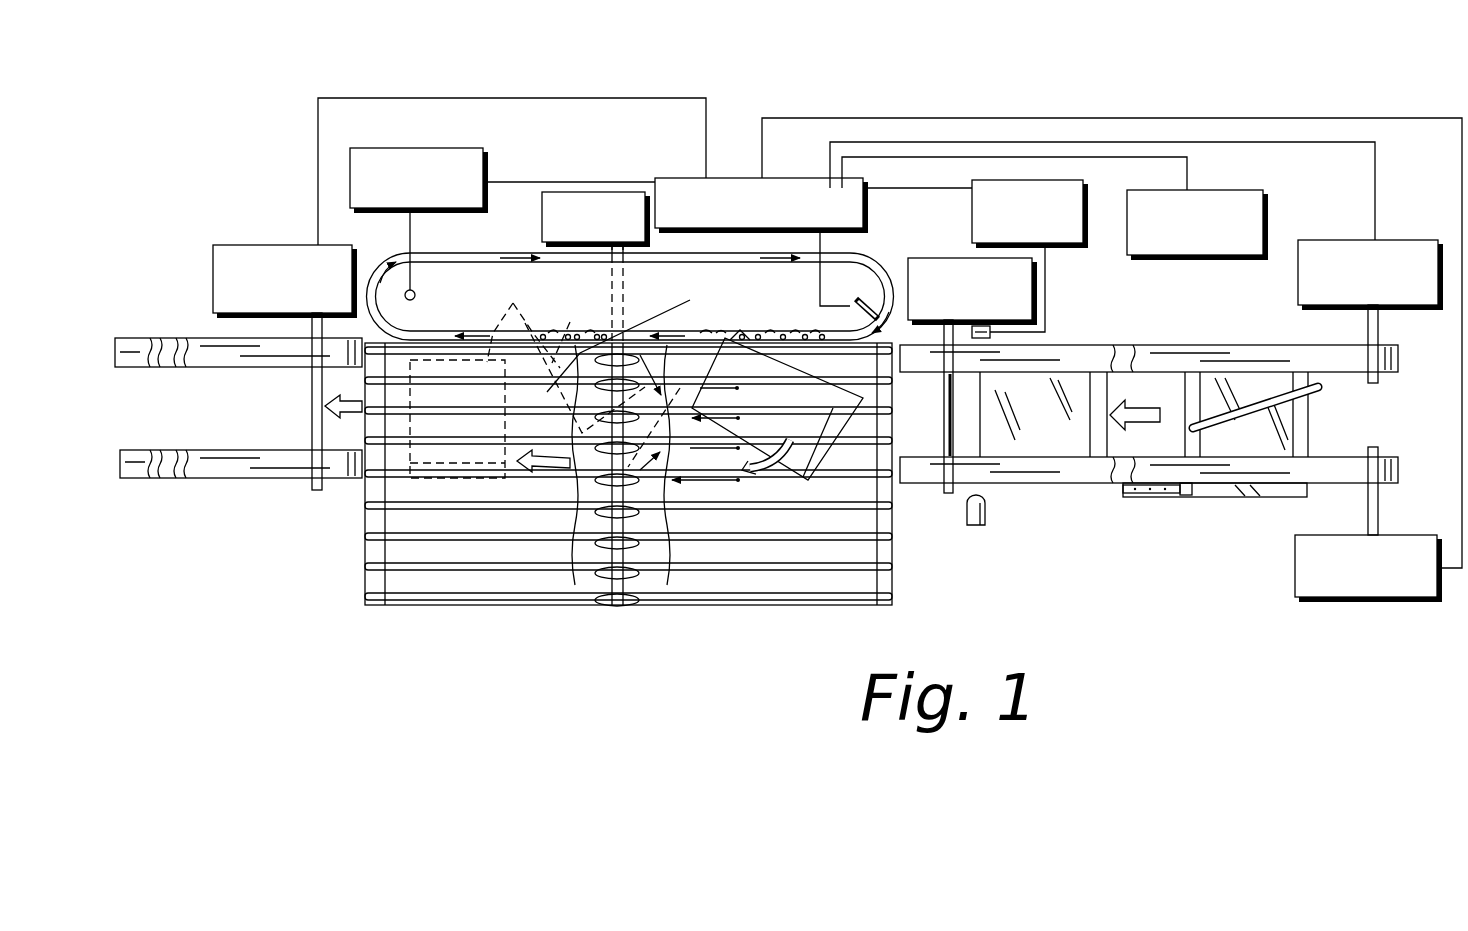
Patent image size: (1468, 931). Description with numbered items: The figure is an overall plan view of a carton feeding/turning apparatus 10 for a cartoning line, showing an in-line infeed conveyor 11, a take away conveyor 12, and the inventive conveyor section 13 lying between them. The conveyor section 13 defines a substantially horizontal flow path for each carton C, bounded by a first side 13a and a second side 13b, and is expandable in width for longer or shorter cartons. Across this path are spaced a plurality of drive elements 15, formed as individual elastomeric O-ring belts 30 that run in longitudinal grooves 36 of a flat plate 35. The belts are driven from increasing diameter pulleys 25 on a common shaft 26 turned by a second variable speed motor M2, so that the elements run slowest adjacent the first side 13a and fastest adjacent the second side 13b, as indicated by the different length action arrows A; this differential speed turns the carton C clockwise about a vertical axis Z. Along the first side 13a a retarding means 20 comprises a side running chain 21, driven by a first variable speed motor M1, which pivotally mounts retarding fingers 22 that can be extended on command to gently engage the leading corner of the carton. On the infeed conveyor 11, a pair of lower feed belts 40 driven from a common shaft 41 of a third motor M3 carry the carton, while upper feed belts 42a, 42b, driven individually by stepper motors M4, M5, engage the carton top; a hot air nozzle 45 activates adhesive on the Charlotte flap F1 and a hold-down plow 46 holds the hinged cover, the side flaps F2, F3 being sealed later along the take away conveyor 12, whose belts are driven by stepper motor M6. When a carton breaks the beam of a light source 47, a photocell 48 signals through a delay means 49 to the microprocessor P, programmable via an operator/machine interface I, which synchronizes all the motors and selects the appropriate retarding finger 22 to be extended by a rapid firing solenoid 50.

The carton feeding/turning apparatus 10 is at (724, 130).
The infeed conveyor 11 is at (1149, 422).
The take away conveyor 12 is at (290, 512).
The conveyor section 13 is at (608, 497).
The first side 13a is at (448, 351).
The second side 13b is at (488, 546).
The drive elements 15 is at (668, 426).
The retarding means 20 is at (500, 248).
The side running chain 21 is at (437, 265).
The retarding fingers 22 is at (762, 336).
The increasing diameter pulleys 25 is at (597, 416).
The common shaft 26 is at (600, 593).
The O-ring belts 30 is at (674, 350).
The flat plate 35 is at (892, 520).
The longitudinal grooves 36 is at (710, 540).
The lower feed belts 40 is at (1054, 467).
The common shaft 41 is at (943, 419).
The upper feed belt 42a is at (1250, 366).
The upper feed belt 42b is at (1208, 482).
The hot air nozzle 45 is at (1156, 491).
The hold-down plow 46 is at (1253, 421).
The light source 47 is at (985, 524).
The photocell 48 is at (992, 332).
The delay means 49 is at (1068, 231).
The rapid firing solenoid 50 is at (868, 306).
The first variable speed motor M1 is at (351, 166).
The second variable speed motor M2 is at (542, 213).
The third variable speed motor M3 is at (925, 262).
The fourth stepper motor M4 is at (1331, 244).
The fifth stepper motor M5 is at (1302, 581).
The stepper motor M6 is at (214, 284).
The microprocessor P is at (682, 178).
The operator/machine interface I is at (1258, 219).
The Charlotte flap F1 is at (1266, 493).
The side flap F2 is at (1190, 396).
The side flap F3 is at (820, 469).
The carton C is at (882, 380).
The vertical axis Z is at (772, 404).
The action arrows A is at (708, 455).